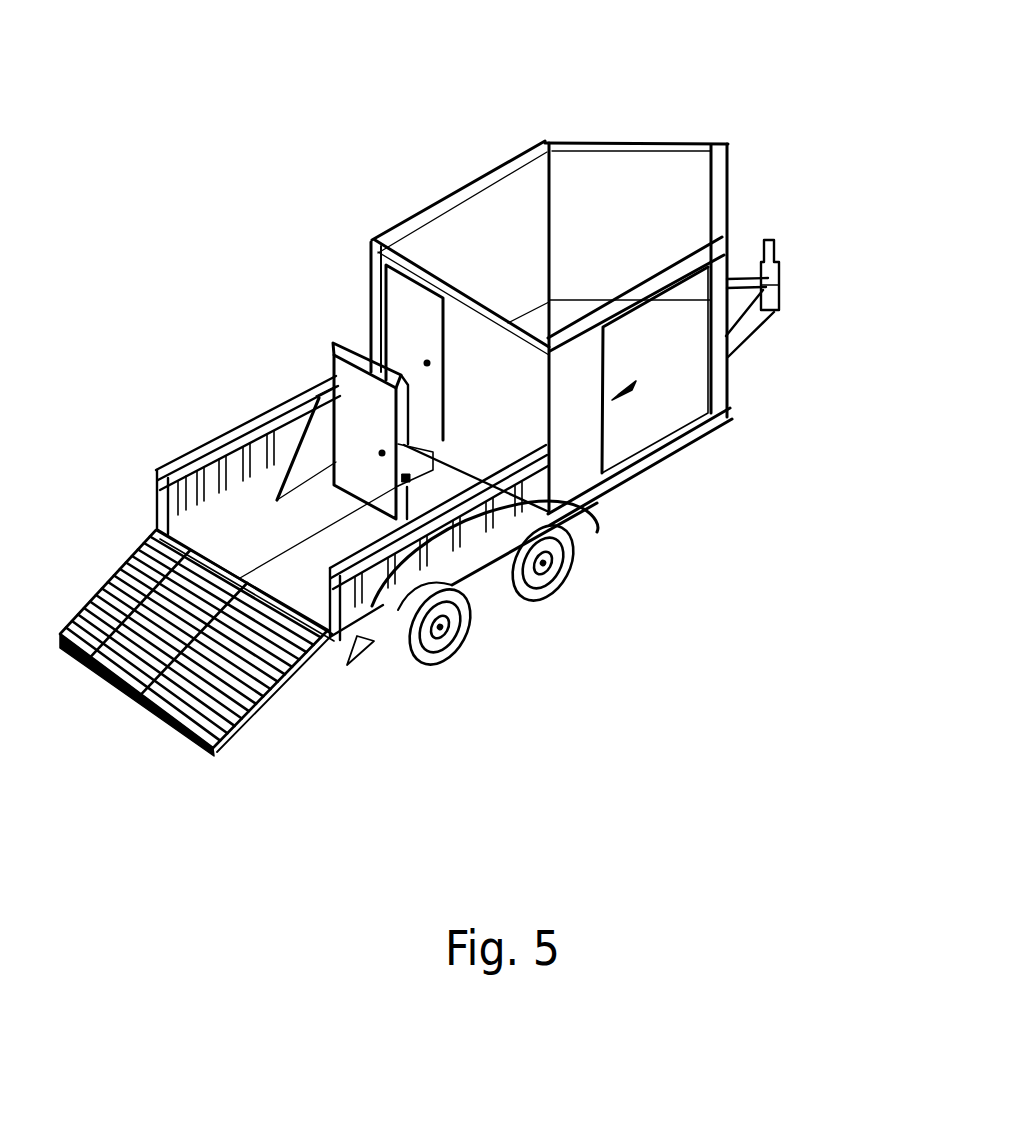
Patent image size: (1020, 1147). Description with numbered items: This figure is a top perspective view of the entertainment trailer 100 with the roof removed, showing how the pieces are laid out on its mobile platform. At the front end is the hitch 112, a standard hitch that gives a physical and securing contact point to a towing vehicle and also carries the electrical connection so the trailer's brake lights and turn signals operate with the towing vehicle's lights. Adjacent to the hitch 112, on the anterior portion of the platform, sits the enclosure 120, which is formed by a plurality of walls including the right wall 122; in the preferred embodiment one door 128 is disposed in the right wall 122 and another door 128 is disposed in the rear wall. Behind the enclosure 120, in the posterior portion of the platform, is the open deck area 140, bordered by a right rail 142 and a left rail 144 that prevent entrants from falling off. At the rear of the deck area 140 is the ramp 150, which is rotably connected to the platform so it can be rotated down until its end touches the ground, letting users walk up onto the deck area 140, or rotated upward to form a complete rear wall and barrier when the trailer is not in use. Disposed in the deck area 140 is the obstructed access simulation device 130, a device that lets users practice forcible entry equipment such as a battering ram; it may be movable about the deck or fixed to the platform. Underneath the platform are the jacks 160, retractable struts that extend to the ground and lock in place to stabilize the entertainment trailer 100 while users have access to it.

The entertainment trailer 100 is at (373, 72).
The hitch 112 is at (766, 237).
The enclosure 120 is at (541, 138).
The right wall 122 is at (583, 468).
The door 128 is at (391, 292).
The obstructed access simulation device 130 is at (341, 338).
The deck area 140 is at (238, 402).
The right rail 142 is at (470, 575).
The left rail 144 is at (188, 448).
The ramp 150 is at (255, 720).
The jacks 160 is at (358, 668).